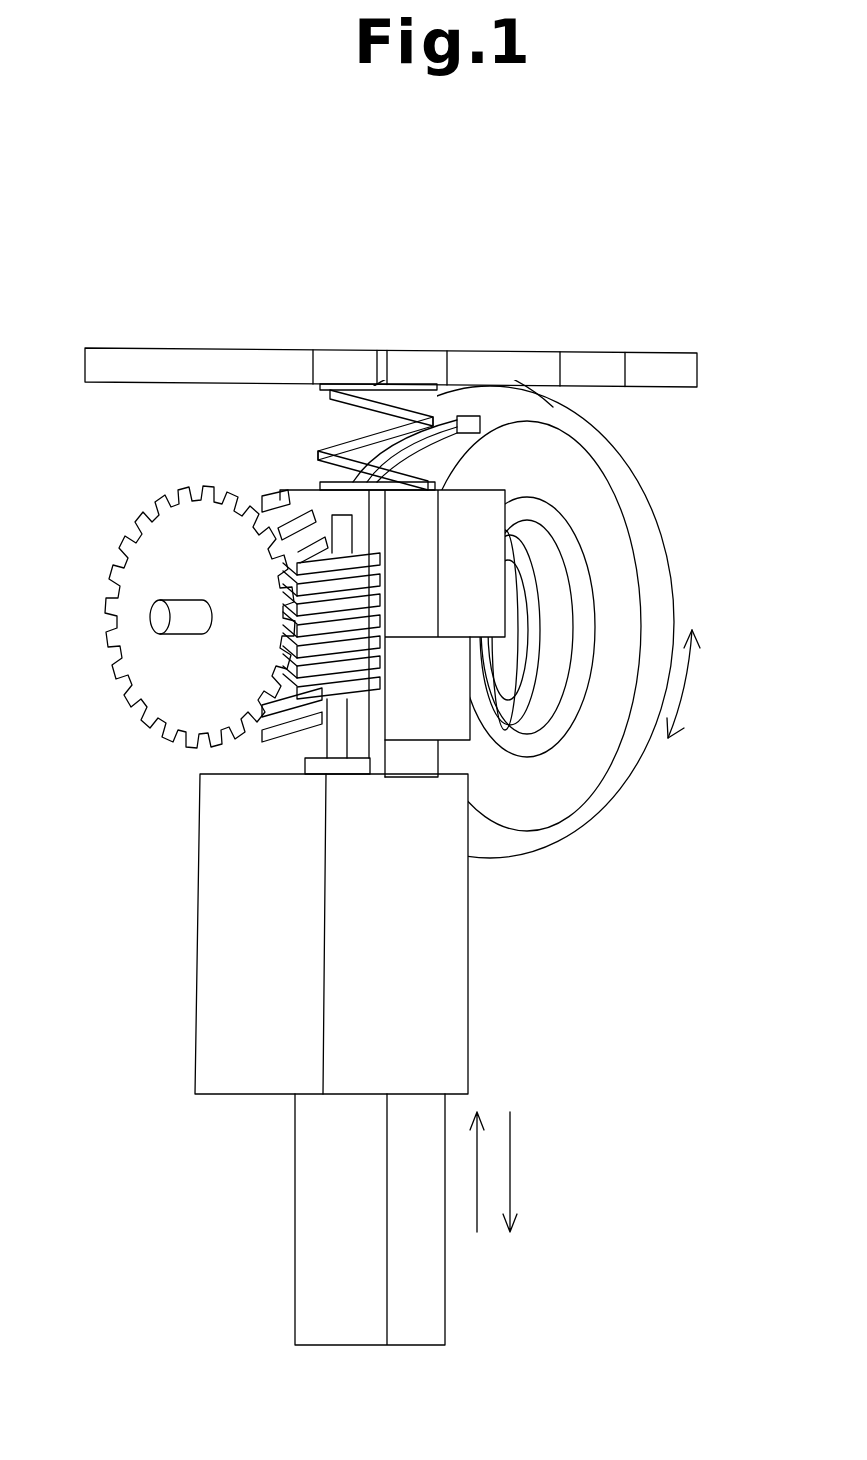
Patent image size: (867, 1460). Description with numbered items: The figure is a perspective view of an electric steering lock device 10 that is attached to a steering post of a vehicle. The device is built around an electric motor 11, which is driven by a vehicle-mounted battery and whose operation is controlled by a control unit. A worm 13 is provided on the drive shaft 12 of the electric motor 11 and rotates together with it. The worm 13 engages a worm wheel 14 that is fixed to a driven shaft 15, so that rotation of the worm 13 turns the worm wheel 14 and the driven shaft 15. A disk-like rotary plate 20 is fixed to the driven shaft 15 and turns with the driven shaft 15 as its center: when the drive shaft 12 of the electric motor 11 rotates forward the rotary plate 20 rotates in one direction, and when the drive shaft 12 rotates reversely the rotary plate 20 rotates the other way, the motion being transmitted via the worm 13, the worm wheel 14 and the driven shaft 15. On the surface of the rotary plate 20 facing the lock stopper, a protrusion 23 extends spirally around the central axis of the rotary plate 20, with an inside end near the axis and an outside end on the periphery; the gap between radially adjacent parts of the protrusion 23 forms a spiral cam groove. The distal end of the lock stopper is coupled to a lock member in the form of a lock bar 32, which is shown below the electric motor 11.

The electric steering lock device 10 is at (699, 246).
The electric motor 11 is at (215, 830).
The drive shaft 12 is at (338, 723).
The worm 13 is at (380, 678).
The worm wheel 14 is at (152, 568).
The driven shaft 15 is at (158, 618).
The rotary plate 20 is at (648, 553).
The protrusion 23 is at (491, 684).
The lock bar 32 is at (446, 1313).